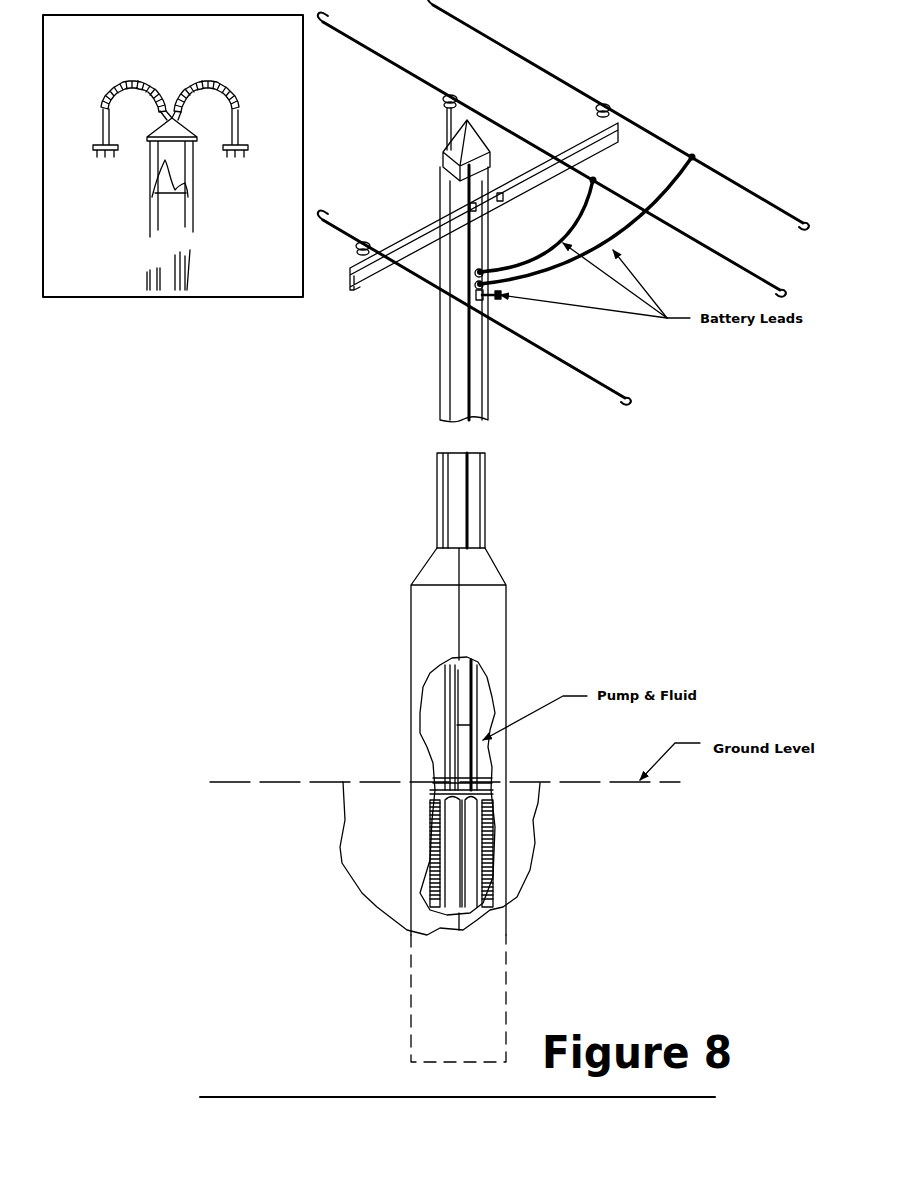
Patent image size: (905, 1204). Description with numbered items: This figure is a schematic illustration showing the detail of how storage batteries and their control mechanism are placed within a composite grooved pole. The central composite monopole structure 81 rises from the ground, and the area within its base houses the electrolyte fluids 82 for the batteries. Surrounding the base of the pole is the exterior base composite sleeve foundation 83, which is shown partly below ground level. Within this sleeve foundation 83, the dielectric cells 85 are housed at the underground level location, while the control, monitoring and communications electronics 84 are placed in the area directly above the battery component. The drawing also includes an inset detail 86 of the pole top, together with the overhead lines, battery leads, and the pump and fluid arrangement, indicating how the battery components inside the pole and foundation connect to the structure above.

The central composite monopole structure 81 is at (437, 477).
The electrolyte fluids 82 is at (452, 842).
The exterior base composite sleeve foundation 83 is at (507, 805).
The control, monitoring and communications electronics 84 is at (462, 700).
The dielectric cells 85 is at (482, 873).
The pole top detail inset 86 is at (173, 156).